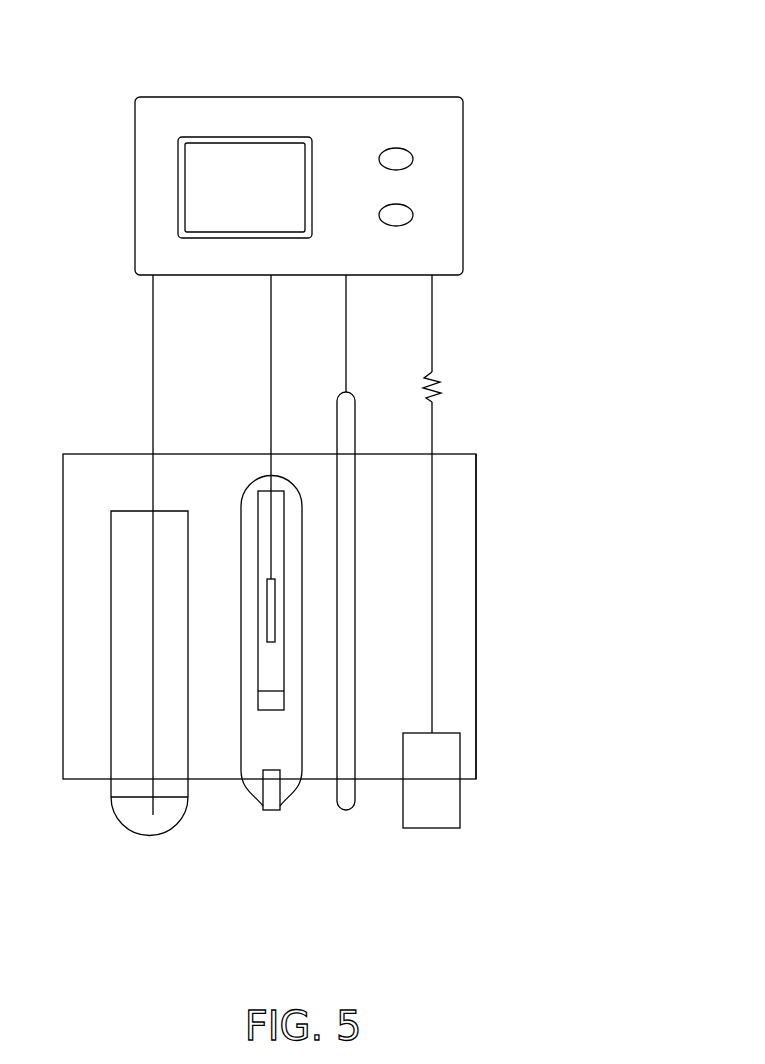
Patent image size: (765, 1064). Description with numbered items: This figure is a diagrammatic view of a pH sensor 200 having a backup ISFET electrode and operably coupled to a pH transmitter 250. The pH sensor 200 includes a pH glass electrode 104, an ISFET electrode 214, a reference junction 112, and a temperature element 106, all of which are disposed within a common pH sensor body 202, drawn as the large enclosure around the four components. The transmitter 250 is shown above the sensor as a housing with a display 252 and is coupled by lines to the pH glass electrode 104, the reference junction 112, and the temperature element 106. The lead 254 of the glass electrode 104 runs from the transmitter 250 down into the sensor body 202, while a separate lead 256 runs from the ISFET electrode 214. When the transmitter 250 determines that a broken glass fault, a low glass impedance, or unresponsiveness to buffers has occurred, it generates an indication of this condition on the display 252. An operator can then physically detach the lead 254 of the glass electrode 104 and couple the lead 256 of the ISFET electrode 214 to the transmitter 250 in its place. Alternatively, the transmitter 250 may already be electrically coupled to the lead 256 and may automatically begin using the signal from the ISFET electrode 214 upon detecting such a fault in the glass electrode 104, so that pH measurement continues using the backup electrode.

The pH transmitter 250 is at (465, 128).
The display 252 is at (244, 180).
The lead 254 is at (153, 362).
The lead 256 is at (433, 432).
The pH sensor 200 is at (482, 559).
The pH sensor body 202 is at (478, 720).
The pH glass electrode 104 is at (142, 842).
The reference junction 112 is at (278, 812).
The temperature element 106 is at (357, 545).
The ISFET electrode 214 is at (440, 830).